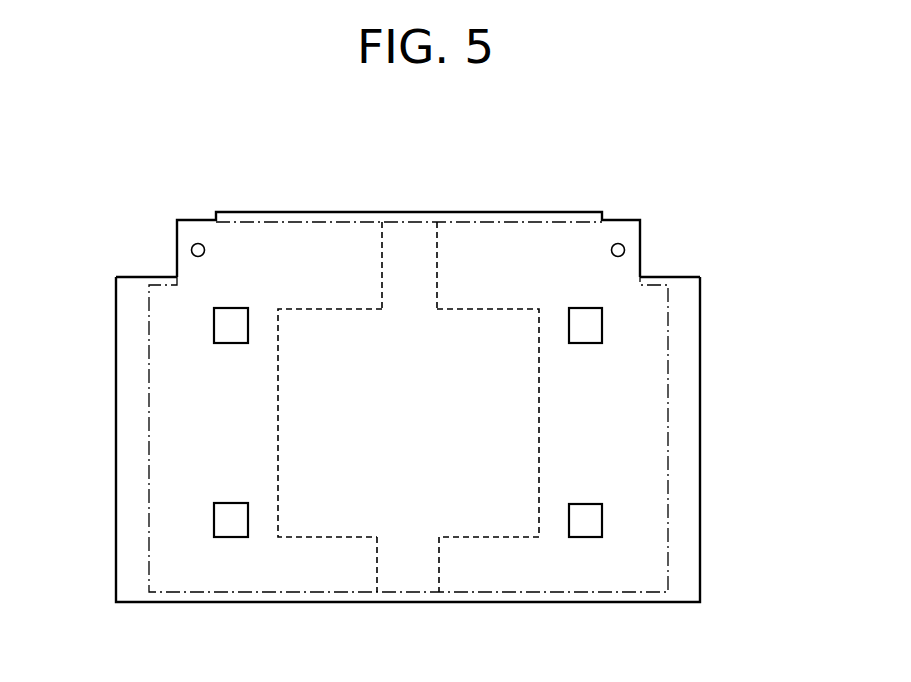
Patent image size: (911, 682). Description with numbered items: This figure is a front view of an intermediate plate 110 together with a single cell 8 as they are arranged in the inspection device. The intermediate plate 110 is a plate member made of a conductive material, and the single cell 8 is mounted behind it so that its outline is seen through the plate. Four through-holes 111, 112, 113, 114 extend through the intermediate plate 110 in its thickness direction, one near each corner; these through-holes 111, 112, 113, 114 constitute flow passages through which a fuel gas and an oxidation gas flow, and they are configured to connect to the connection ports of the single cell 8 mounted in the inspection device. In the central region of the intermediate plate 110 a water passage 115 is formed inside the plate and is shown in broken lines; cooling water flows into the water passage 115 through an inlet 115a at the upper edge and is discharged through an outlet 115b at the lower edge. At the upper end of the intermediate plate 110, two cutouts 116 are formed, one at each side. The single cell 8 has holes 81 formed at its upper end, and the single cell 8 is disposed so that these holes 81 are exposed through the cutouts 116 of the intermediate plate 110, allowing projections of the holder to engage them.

The intermediate plate 110 is at (492, 190).
The cutouts 116 is at (135, 277).
The holes 81 is at (198, 243).
The single cell 8 is at (149, 450).
The through-hole 111 is at (214, 327).
The through-hole 112 is at (214, 522).
The through-hole 113 is at (602, 518).
The through-hole 114 is at (602, 322).
The water passage 115 is at (539, 427).
The inlet 115a is at (382, 252).
The outlet 115b is at (377, 547).